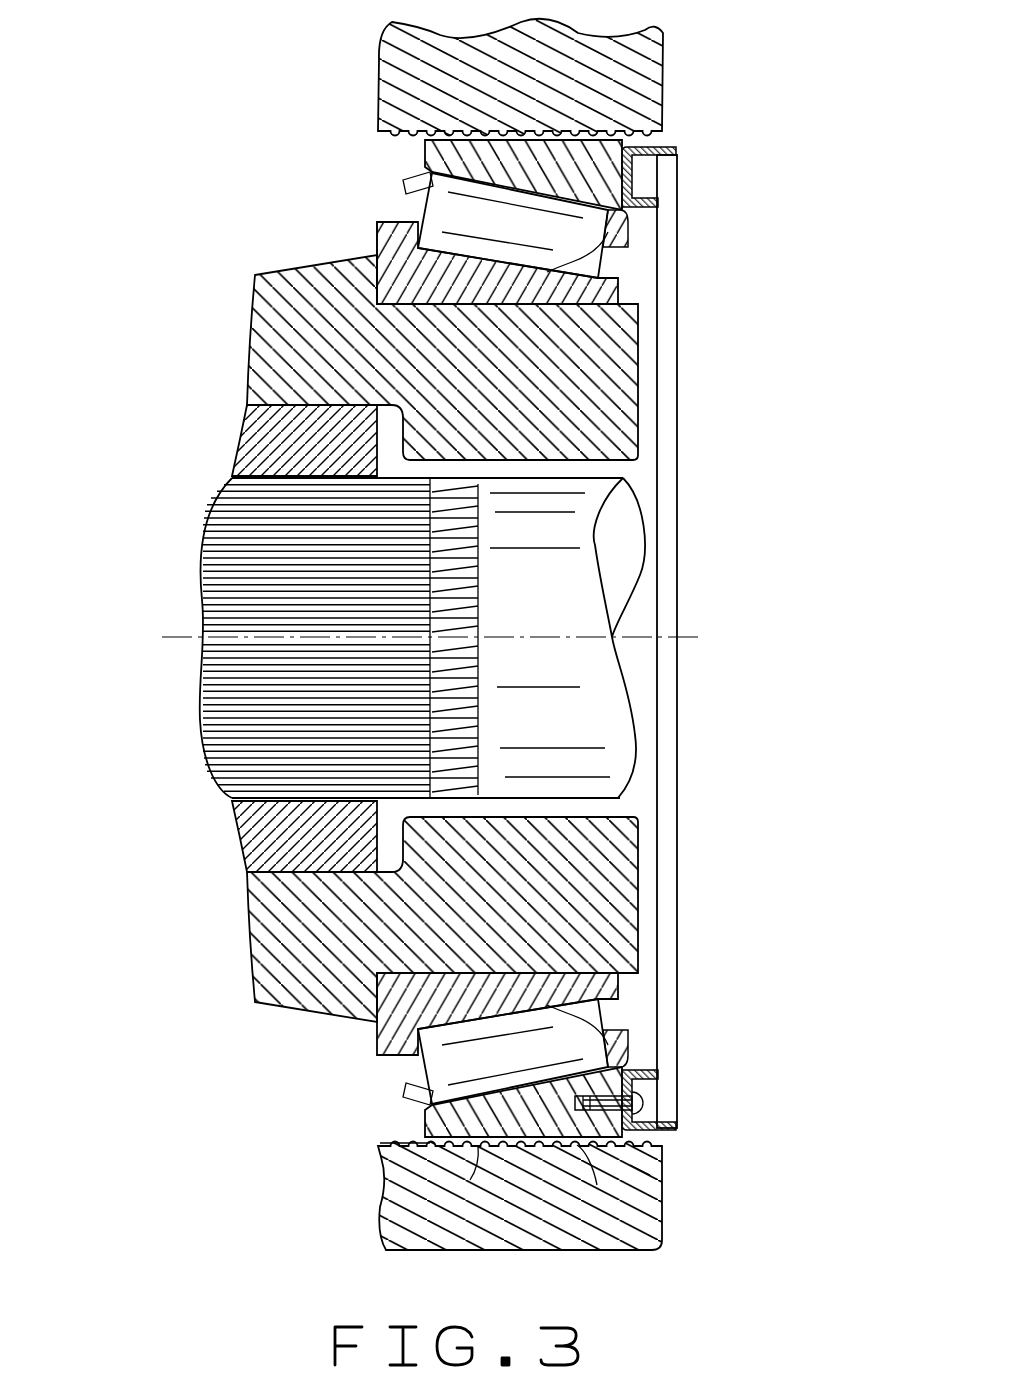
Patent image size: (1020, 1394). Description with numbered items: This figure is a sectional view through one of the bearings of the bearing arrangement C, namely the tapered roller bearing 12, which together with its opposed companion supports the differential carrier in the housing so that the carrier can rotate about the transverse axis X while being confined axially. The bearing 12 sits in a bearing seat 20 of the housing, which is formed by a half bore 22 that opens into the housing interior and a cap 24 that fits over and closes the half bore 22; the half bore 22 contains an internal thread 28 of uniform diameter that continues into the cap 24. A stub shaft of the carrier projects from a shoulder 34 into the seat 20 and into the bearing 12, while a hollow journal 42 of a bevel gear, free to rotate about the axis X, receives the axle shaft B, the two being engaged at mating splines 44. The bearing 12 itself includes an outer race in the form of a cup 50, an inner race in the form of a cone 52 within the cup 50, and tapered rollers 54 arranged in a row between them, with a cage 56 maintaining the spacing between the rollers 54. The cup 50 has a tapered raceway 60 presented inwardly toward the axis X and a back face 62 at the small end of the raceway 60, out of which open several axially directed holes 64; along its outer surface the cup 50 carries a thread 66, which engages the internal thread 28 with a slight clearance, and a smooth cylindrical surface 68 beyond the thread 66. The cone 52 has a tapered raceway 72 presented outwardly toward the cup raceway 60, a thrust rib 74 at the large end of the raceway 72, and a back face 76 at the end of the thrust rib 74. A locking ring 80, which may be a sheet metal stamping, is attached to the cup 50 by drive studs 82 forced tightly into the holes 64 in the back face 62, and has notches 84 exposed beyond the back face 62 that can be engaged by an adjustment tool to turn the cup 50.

The tapered roller bearing 12 is at (386, 168).
The bearing seat 20 is at (668, 75).
The half bore 22 is at (577, 155).
The cap 24 is at (548, 1228).
The internal thread 28 is at (400, 1126).
The shoulder 34 is at (377, 233).
The journal 42 is at (280, 440).
The mating splines 44 is at (252, 737).
The cup 50 is at (405, 1089).
The cone 52 is at (527, 968).
The tapered rollers 54 is at (578, 1028).
The cage 56 is at (630, 1040).
The tapered raceway 60 is at (432, 1062).
The back face 62 is at (660, 1143).
The axially directed holes 64 is at (640, 1170).
The thread 66 is at (597, 1185).
The cylindrical surface 68 is at (470, 1180).
The tapered raceway 72 is at (608, 231).
The thrust rib 74 is at (395, 247).
The back face 76 is at (377, 242).
The locking ring 80 is at (676, 150).
The drive studs 82 is at (645, 1101).
The notches 84 is at (676, 341).
The axle shaft B is at (627, 735).
The bearing arrangement C is at (213, 1001).
The transverse axis X is at (416, 637).